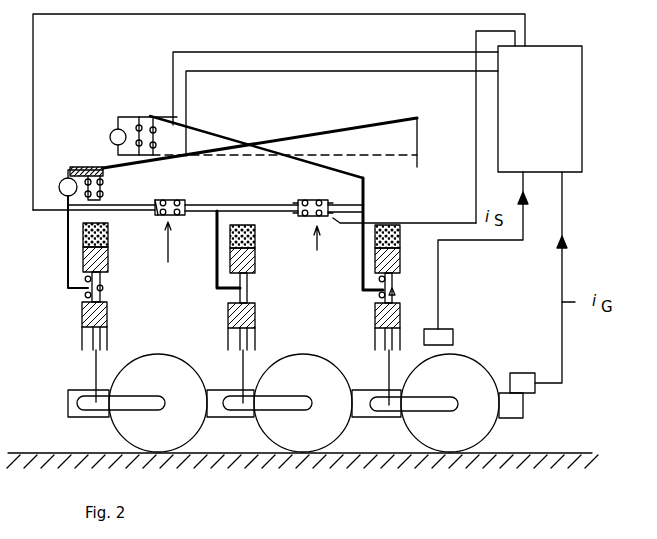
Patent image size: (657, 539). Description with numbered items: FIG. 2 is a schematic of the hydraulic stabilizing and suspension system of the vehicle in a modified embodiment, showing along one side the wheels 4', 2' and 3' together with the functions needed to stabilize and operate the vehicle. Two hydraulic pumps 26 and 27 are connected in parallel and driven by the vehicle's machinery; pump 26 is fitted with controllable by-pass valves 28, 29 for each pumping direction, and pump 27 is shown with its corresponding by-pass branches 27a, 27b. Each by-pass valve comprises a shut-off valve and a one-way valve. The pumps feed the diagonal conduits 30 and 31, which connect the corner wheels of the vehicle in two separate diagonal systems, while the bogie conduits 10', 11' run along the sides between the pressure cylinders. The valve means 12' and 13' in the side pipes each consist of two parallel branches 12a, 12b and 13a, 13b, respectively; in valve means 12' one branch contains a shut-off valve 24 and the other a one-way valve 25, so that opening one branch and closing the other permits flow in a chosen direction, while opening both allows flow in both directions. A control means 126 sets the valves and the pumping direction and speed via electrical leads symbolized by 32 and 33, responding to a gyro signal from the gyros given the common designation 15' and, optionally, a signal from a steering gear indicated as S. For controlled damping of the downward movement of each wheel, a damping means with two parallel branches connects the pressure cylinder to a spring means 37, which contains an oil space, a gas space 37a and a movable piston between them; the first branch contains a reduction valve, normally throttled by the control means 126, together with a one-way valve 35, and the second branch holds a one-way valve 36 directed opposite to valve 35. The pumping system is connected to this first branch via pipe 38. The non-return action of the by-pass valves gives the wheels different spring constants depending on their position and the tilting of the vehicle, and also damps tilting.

The control means 126 is at (570, 90).
The electrical lead 32 is at (277, 52).
The electrical lead 33 is at (328, 70).
The diagonal conduit 30 is at (302, 135).
The diagonal conduit 31 is at (218, 132).
The hydraulic pump 27 is at (118, 128).
The valve 27a is at (126, 117).
The valve 27b is at (158, 132).
The hydraulic pump 26 is at (62, 178).
The controllable by-pass valve 28 is at (83, 168).
The controllable by-pass valve 29 is at (100, 170).
The pipe 38 is at (67, 235).
The bogie conduit 10' is at (215, 191).
The bogie conduit 11' is at (213, 249).
The parallel branch 13a is at (177, 198).
The parallel branch 13b is at (160, 214).
The valve means 13' is at (169, 252).
The shut-off valve 24 is at (306, 201).
The one-way valve 25 is at (316, 199).
The parallel branch 12a is at (329, 202).
The parallel branch 12b is at (300, 217).
The valve means 12' is at (319, 252).
The gas space 37a is at (108, 239).
The spring means 37 is at (108, 256).
The one-way valve 36 is at (103, 288).
The one-way valve 35 is at (86, 279).
The wheel 4' is at (158, 384).
The wheel 2' is at (303, 386).
The wheel 3' is at (450, 385).
The gyros 15' is at (531, 368).
The steering gear S is at (440, 337).